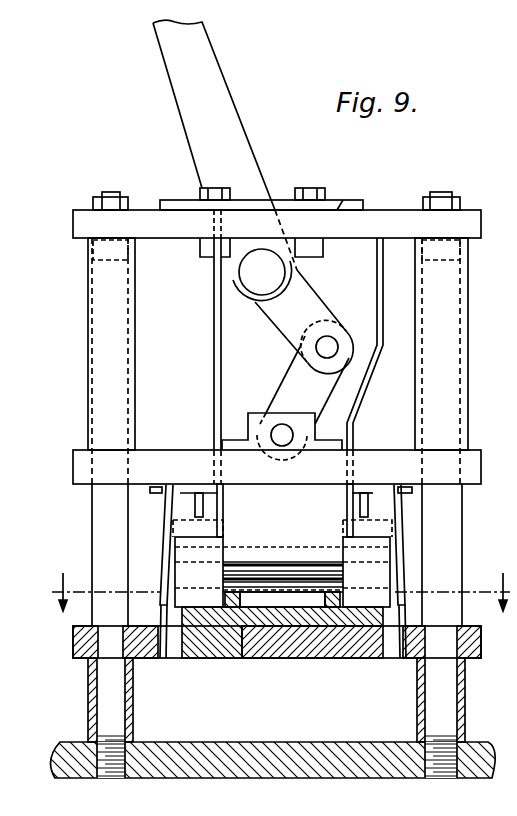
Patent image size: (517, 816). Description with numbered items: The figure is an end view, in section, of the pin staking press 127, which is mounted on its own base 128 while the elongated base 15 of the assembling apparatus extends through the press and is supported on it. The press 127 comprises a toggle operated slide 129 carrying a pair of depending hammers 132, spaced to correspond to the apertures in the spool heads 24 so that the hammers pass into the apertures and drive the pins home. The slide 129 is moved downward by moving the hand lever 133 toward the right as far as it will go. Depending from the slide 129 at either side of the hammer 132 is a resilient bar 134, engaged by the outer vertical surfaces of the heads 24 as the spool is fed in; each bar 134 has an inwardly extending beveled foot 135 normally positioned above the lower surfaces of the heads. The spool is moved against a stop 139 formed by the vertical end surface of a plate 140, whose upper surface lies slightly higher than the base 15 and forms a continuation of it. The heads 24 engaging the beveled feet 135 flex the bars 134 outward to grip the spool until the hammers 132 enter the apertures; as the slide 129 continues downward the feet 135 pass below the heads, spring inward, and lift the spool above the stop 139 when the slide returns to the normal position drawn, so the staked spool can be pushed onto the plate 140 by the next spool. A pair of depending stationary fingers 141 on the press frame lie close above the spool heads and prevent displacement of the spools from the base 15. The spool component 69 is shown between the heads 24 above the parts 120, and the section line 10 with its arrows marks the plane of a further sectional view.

The staking press 127 is at (78, 268).
The hand lever 133 is at (195, 99).
The depending stationary fingers 141 is at (215, 339).
The toggle operated slide 129 is at (167, 468).
The depending hammers 132 is at (197, 500).
The heads 24 is at (178, 541).
The resilient bar 134 is at (163, 552).
The section line 10 is at (281, 590).
The strip 69 is at (277, 570).
The plate 140 is at (255, 590).
The stop 139 is at (295, 600).
The foot 135 is at (172, 608).
The base 15 is at (206, 618).
The spacer blocks 120 is at (331, 606).
The base 128 is at (62, 724).